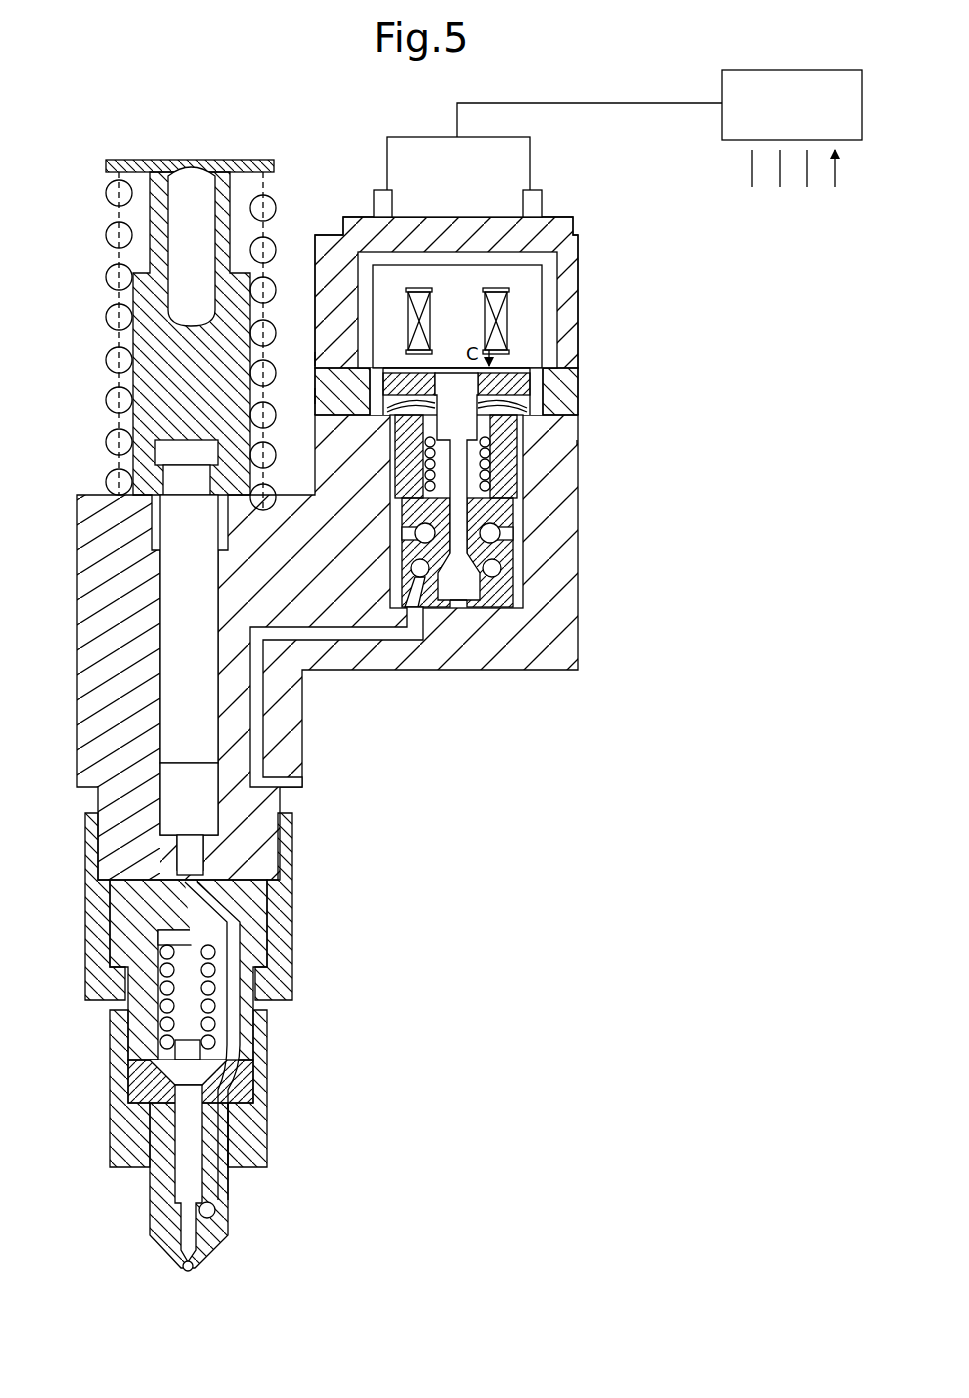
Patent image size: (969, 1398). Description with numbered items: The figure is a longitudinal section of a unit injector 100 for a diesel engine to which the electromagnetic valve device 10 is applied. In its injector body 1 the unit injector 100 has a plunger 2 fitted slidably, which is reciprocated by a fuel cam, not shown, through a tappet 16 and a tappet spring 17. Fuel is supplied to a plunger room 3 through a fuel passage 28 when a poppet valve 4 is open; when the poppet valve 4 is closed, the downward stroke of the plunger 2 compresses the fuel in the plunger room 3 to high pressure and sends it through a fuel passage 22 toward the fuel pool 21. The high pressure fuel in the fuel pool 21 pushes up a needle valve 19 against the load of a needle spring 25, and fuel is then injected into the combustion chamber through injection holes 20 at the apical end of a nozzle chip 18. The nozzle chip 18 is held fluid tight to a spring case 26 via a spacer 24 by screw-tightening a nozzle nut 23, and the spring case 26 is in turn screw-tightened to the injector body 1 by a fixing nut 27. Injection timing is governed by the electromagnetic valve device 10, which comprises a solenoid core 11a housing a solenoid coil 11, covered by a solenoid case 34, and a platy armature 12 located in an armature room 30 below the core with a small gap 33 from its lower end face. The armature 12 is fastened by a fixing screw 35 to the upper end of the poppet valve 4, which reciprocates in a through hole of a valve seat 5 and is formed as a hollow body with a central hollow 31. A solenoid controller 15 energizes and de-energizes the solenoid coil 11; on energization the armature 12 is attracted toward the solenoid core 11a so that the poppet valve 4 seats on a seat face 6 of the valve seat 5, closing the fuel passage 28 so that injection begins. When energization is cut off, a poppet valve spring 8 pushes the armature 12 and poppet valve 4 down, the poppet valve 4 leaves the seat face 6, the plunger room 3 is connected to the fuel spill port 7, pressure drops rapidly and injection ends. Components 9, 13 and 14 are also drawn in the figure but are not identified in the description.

The injector body 1 is at (572, 652).
The plunger 2 is at (208, 728).
The plunger room 3 is at (205, 802).
The poppet valve 4 is at (512, 520).
The valve seat 5 is at (555, 608).
The seat face 6 is at (505, 578).
The fuel spill port 7 is at (500, 540).
The poppet valve spring 8 is at (488, 478).
The valve sleeve 9 is at (518, 452).
The electromagnetic valve device 10 is at (585, 230).
The solenoid coil 11 is at (520, 297).
The solenoid core 11a is at (515, 322).
The armature 12 is at (527, 378).
The stator 13 is at (395, 370).
The armature spring 14 is at (540, 403).
The solenoid controller 15 is at (676, 156).
The tappet 16 is at (160, 336).
The tappet spring 17 is at (265, 207).
The nozzle chip 18 is at (157, 1200).
The needle valve 19 is at (192, 1155).
The injection holes 20 is at (195, 1263).
The fuel pool 21 is at (212, 1211).
The fuel passage 22 is at (236, 955).
The nozzle nut 23 is at (118, 1145).
The spacer 24 is at (138, 1082).
The needle spring 25 is at (212, 1016).
The spring case 26 is at (258, 922).
The fixing nut 27 is at (295, 895).
The fuel passage 28 is at (385, 636).
The armature room 30 is at (323, 396).
The central hollow 31 is at (457, 555).
The small gap 33 is at (330, 358).
The solenoid case 34 is at (483, 222).
The fixing screw 35 is at (535, 425).
The unit injector 100 is at (540, 706).